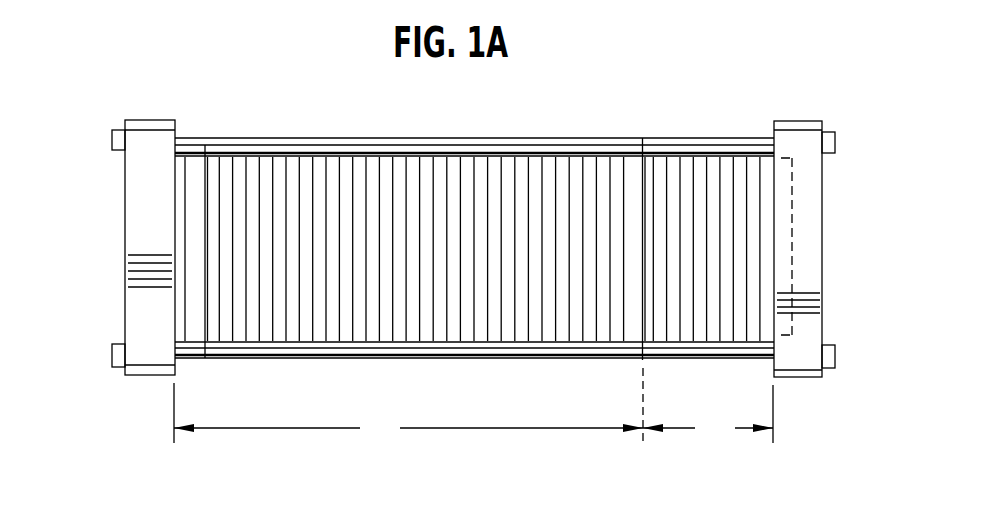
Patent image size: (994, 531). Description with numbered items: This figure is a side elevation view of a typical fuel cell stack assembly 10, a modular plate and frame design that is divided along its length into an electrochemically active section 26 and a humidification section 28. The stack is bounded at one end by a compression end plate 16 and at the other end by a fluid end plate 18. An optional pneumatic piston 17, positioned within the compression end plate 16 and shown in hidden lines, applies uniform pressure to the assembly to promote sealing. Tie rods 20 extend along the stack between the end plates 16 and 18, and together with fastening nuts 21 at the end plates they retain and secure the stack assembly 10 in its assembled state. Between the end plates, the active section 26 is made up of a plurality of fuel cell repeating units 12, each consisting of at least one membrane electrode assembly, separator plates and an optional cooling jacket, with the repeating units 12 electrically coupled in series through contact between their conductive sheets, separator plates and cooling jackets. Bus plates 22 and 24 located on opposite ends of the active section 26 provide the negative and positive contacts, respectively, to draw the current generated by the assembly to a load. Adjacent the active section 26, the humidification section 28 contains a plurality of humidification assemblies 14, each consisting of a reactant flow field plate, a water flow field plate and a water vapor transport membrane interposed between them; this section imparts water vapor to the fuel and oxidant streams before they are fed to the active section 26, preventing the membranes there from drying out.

The fuel cell stack assembly 10 is at (656, 86).
The fuel cell repeating unit 12 is at (267, 160).
The humidification assembly 14 is at (730, 160).
The compression end plate 16 is at (800, 125).
The pneumatic piston 17 is at (780, 262).
The fluid end plate 18 is at (160, 138).
The tie rod 20 is at (406, 140).
The fastening nut 21 is at (118, 345).
The bus plate 22 is at (207, 360).
The bus plate 24 is at (643, 341).
The electrochemically active section 26 is at (408, 415).
The humidification section 28 is at (708, 408).